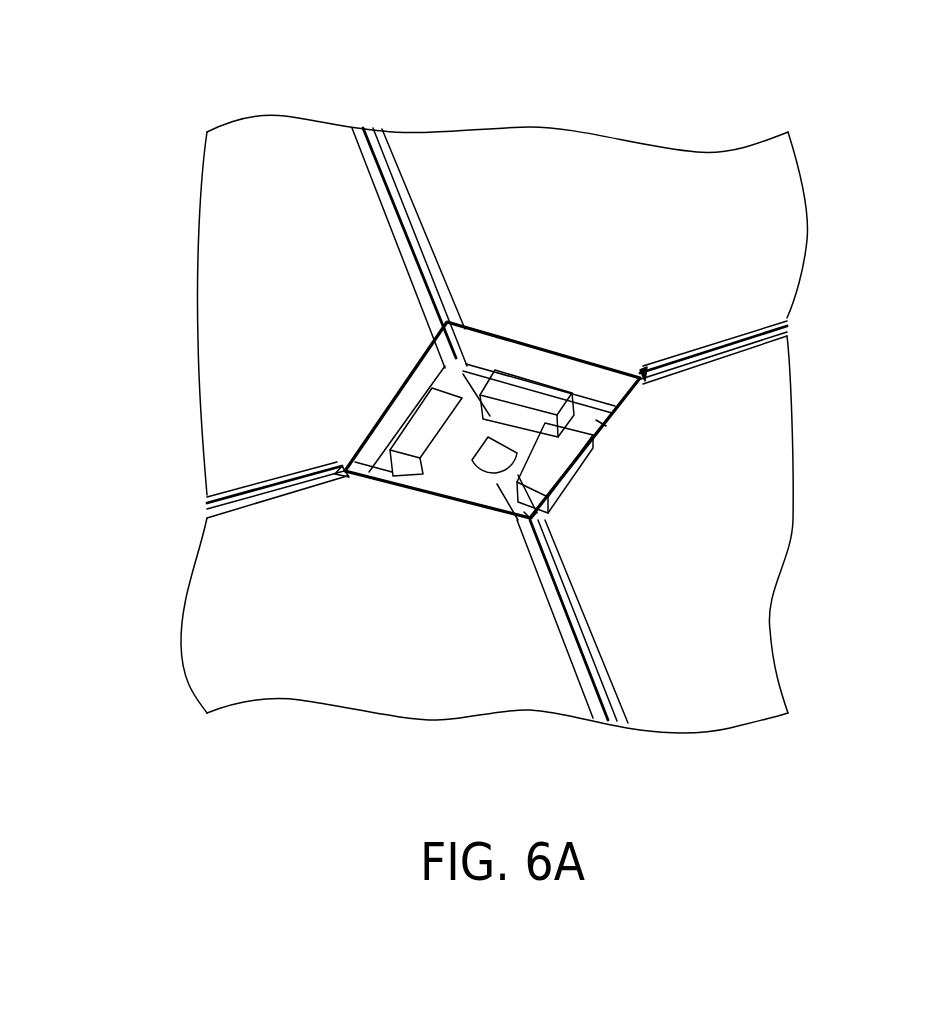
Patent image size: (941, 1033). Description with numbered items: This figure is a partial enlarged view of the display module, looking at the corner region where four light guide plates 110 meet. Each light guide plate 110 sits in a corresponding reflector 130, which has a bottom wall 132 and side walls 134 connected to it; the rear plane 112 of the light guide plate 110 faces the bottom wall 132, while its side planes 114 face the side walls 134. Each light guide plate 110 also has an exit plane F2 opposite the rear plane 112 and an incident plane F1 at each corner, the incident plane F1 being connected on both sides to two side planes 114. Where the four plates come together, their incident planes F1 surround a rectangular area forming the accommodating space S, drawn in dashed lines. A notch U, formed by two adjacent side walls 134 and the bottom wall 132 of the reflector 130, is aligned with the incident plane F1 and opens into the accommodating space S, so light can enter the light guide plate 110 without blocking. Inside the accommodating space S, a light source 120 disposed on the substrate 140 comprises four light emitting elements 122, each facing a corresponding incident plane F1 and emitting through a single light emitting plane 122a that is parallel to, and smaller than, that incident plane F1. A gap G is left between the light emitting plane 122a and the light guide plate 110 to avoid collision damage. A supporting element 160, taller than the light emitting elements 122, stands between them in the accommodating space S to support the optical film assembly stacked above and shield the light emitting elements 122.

The light guide plate 110 is at (482, 406).
The rear plane 112 is at (500, 338).
The side plane 114 is at (420, 297).
The incident plane F1 is at (609, 381).
The exit plane F2 is at (248, 195).
The light source 120 is at (477, 410).
The light emitting element 122 is at (477, 410).
The light emitting plane 122a is at (538, 380).
The reflector 130 is at (487, 398).
The bottom wall 132 is at (373, 471).
The side wall 134 is at (398, 227).
The substrate 140 is at (596, 422).
The supporting element 160 is at (497, 462).
The gap G is at (615, 405).
The accommodating space S is at (591, 452).
The notch U is at (473, 335).